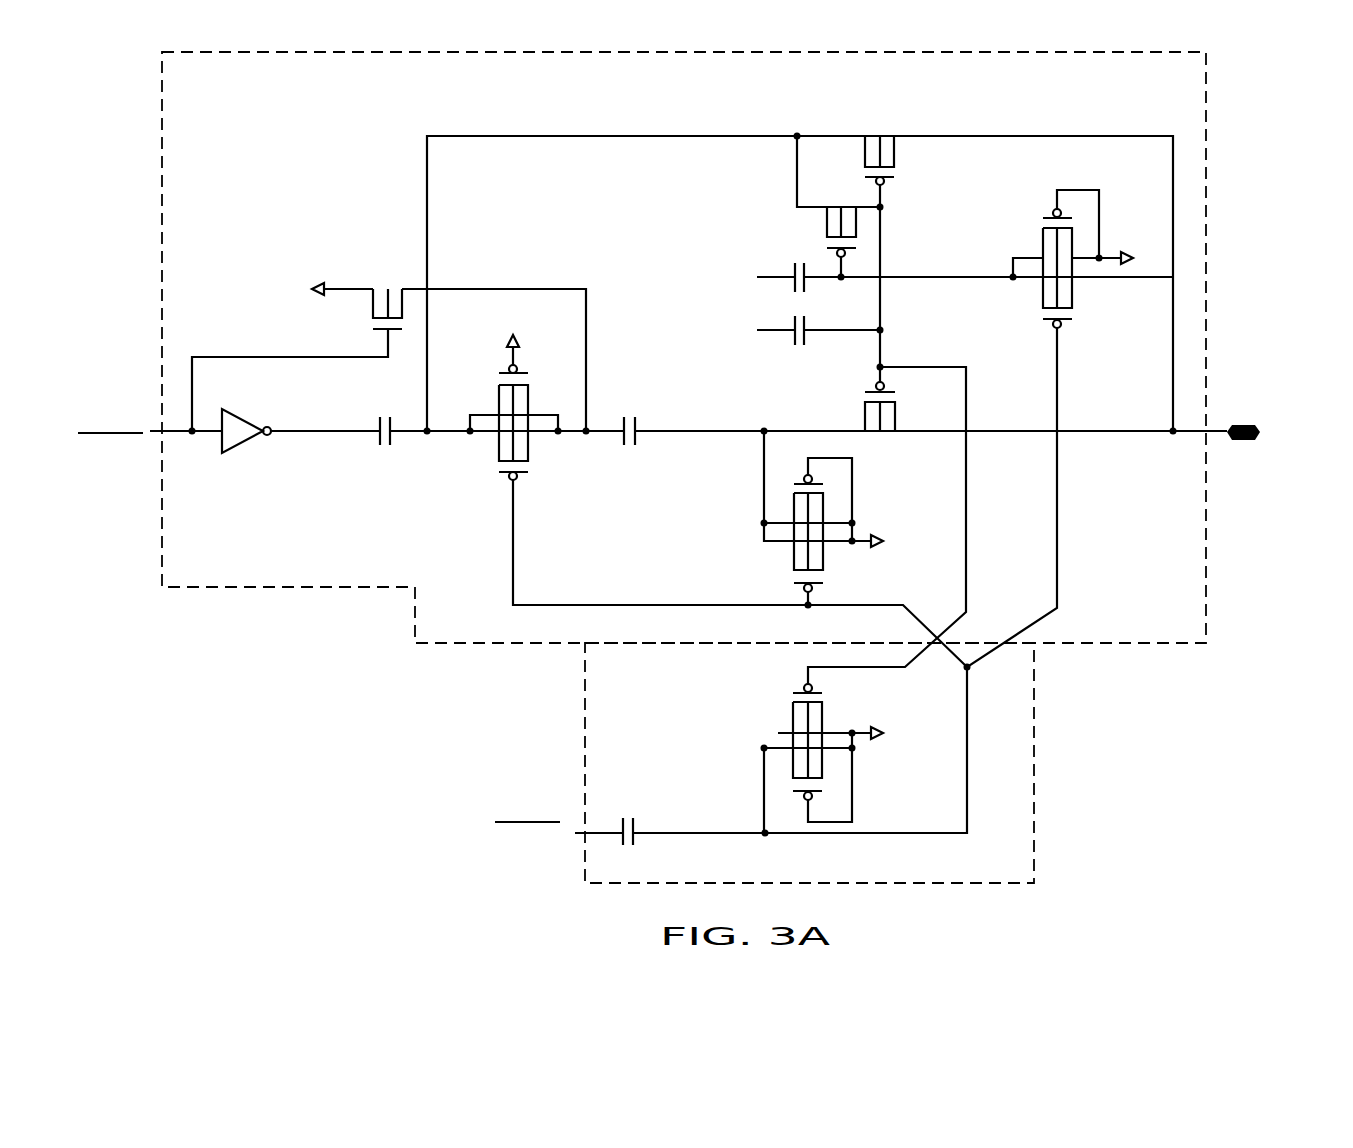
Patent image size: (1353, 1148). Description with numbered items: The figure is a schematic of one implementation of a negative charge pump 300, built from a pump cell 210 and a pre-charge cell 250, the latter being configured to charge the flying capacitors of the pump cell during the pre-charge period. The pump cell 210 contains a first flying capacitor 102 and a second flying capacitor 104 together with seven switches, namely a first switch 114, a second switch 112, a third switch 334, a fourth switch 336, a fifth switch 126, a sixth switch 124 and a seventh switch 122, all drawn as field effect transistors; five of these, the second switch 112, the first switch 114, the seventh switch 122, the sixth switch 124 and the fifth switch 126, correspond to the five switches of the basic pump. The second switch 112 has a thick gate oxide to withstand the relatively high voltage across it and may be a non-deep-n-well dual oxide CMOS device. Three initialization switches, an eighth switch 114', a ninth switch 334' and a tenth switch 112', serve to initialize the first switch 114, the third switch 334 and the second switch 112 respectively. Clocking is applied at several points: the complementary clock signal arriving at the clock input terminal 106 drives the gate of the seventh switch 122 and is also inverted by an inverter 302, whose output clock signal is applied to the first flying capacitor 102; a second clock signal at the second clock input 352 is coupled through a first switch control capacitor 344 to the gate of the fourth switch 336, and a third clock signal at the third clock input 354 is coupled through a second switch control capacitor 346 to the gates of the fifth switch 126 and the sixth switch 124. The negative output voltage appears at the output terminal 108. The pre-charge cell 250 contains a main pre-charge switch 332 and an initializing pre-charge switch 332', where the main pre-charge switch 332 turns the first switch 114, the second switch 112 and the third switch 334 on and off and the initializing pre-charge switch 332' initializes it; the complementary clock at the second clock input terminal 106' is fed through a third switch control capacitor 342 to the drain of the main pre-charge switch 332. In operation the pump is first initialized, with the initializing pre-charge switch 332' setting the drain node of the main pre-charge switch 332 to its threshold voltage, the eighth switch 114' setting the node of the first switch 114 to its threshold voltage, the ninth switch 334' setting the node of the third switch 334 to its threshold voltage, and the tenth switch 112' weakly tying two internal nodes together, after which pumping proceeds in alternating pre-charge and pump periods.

The negative charge pump 300 is at (221, 718).
The pump cell 210 is at (1207, 145).
The pre-charge cell 250 is at (1034, 763).
The clock input terminal CLK 106 is at (111, 448).
The inverted clock input terminal CLK1A 106' is at (525, 858).
The output terminal VNEG 108 is at (1277, 456).
The inverter I1A 302 is at (277, 435).
The flying capacitor C1A 102 is at (382, 435).
The flying capacitor C2A 104 is at (632, 435).
The switch M2A 112 is at (507, 491).
The switch M10A 112' is at (508, 388).
The switch M1A 114 is at (810, 568).
The switch M8A 114' is at (829, 489).
The switch M7A 122 is at (357, 287).
The switch M6A 124 is at (876, 434).
The switch M5A 126 is at (903, 133).
The switch M0B 332 is at (811, 715).
The switch M1B 332' is at (771, 803).
The switch M3A 334 is at (1068, 316).
The switch M9A 334' is at (1081, 231).
The switch M4A 336 is at (844, 216).
The switch control capacitor C0B 342 is at (628, 832).
The switch control capacitor C3A 344 is at (784, 251).
The switch control capacitor C4A 346 is at (798, 335).
The clock input CLK2A 352 is at (692, 278).
The clock input CLK3A 354 is at (692, 332).